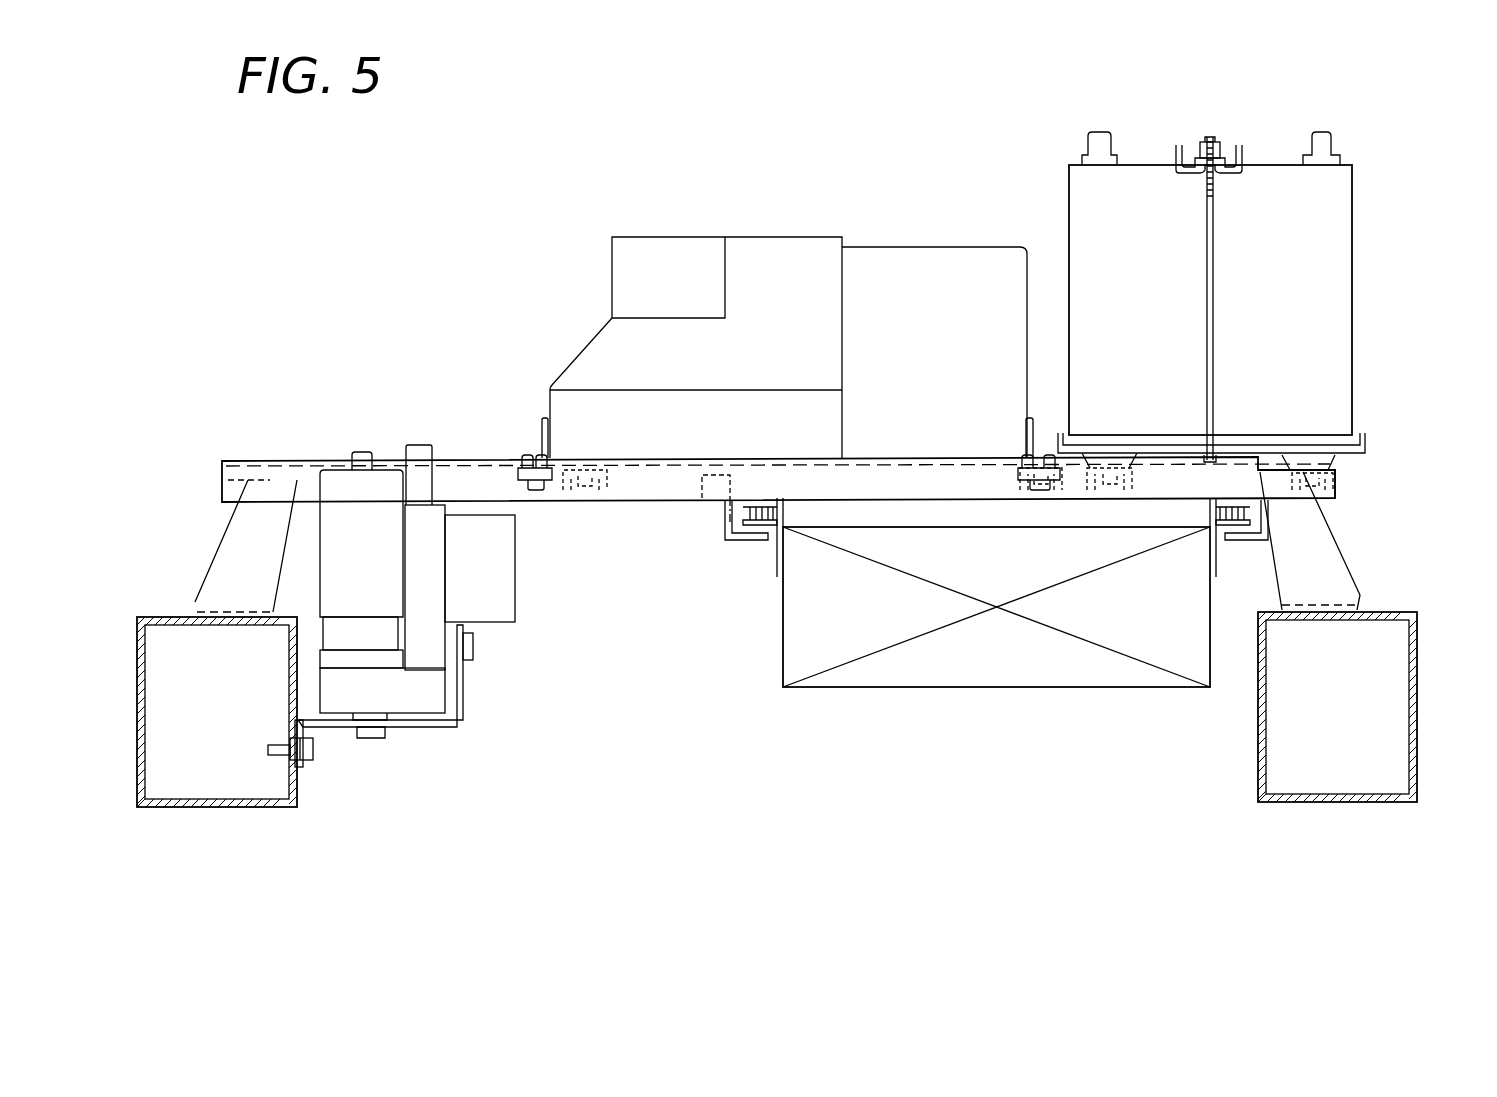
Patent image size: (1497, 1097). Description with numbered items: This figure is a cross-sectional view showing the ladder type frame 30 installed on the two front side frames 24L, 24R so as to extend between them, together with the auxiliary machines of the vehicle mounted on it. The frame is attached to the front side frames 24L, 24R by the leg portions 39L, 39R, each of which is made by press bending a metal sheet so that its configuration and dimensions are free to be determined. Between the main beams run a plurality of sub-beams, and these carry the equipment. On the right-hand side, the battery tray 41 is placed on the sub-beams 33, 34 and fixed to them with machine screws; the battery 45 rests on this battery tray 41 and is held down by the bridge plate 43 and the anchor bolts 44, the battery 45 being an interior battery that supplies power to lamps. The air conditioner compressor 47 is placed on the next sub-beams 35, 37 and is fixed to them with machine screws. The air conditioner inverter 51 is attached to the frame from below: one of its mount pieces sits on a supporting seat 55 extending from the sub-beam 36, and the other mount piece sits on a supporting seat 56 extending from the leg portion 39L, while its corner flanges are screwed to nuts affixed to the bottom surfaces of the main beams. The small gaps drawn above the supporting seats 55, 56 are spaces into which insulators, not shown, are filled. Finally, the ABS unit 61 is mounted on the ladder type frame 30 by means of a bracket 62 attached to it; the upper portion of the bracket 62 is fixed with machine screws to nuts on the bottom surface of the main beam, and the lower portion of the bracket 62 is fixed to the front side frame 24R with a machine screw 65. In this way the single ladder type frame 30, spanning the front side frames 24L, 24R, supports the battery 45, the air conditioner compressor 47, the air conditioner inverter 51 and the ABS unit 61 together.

The ladder type frame 30 is at (490, 457).
The sub-beam 33 is at (1337, 482).
The sub-beam 34 is at (1130, 483).
The sub-beam 35 is at (1060, 483).
The sub-beam 36 is at (720, 488).
The sub-beam 37 is at (585, 500).
The leg portion 39R is at (208, 558).
The leg portion 39L is at (1343, 553).
The battery tray 41 is at (1367, 452).
The bridge plate 43 is at (1245, 153).
The anchor bolt 44 is at (1213, 347).
The battery 45 is at (1352, 238).
The air conditioner compressor 47 is at (913, 247).
The air conditioner inverter 51 is at (925, 687).
The supporting seat 55 is at (748, 542).
The supporting seat 56 is at (1247, 540).
The ABS unit 61 is at (357, 530).
The bracket 62 is at (422, 727).
The machine screw 65 is at (313, 750).
The front side frame 24R is at (240, 807).
The front side frame 24L is at (1345, 802).